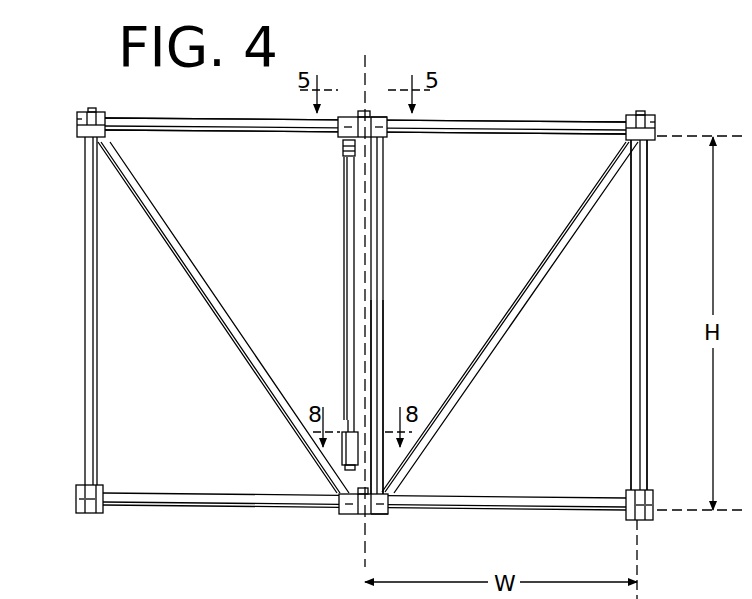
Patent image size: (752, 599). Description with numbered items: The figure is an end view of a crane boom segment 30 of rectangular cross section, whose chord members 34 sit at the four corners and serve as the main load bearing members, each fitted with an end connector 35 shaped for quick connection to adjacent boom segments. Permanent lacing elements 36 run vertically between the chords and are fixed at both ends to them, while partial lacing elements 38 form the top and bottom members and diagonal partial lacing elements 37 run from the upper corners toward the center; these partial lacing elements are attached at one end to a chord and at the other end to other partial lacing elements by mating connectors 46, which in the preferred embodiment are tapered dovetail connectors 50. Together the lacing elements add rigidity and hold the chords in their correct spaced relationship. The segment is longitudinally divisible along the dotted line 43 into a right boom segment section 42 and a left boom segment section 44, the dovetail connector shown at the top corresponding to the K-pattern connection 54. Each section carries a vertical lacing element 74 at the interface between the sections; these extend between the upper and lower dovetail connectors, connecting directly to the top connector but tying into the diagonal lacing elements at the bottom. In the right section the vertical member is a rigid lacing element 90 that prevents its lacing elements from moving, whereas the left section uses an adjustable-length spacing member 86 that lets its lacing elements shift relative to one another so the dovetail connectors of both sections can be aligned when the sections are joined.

The crane boom segment 30 is at (659, 299).
The chord members 34 is at (100, 112).
The end connectors 35 is at (77, 125).
The permanent lacing elements 36 is at (92, 357).
The diagonal partial lacing elements 37 is at (228, 320).
The partial lacing elements 38 is at (211, 136).
The boom segment section 42 is at (565, 119).
The dotted line 43 is at (367, 66).
The boom segment section 44 is at (172, 115).
The mating connectors 46 is at (374, 120).
The dovetail connectors 50 is at (342, 141).
The K-pattern connection 54 is at (386, 139).
The vertical lacing element 74 is at (344, 272).
The adjustable-length spacing member 86 is at (343, 362).
The rigid lacing element 90 is at (384, 352).